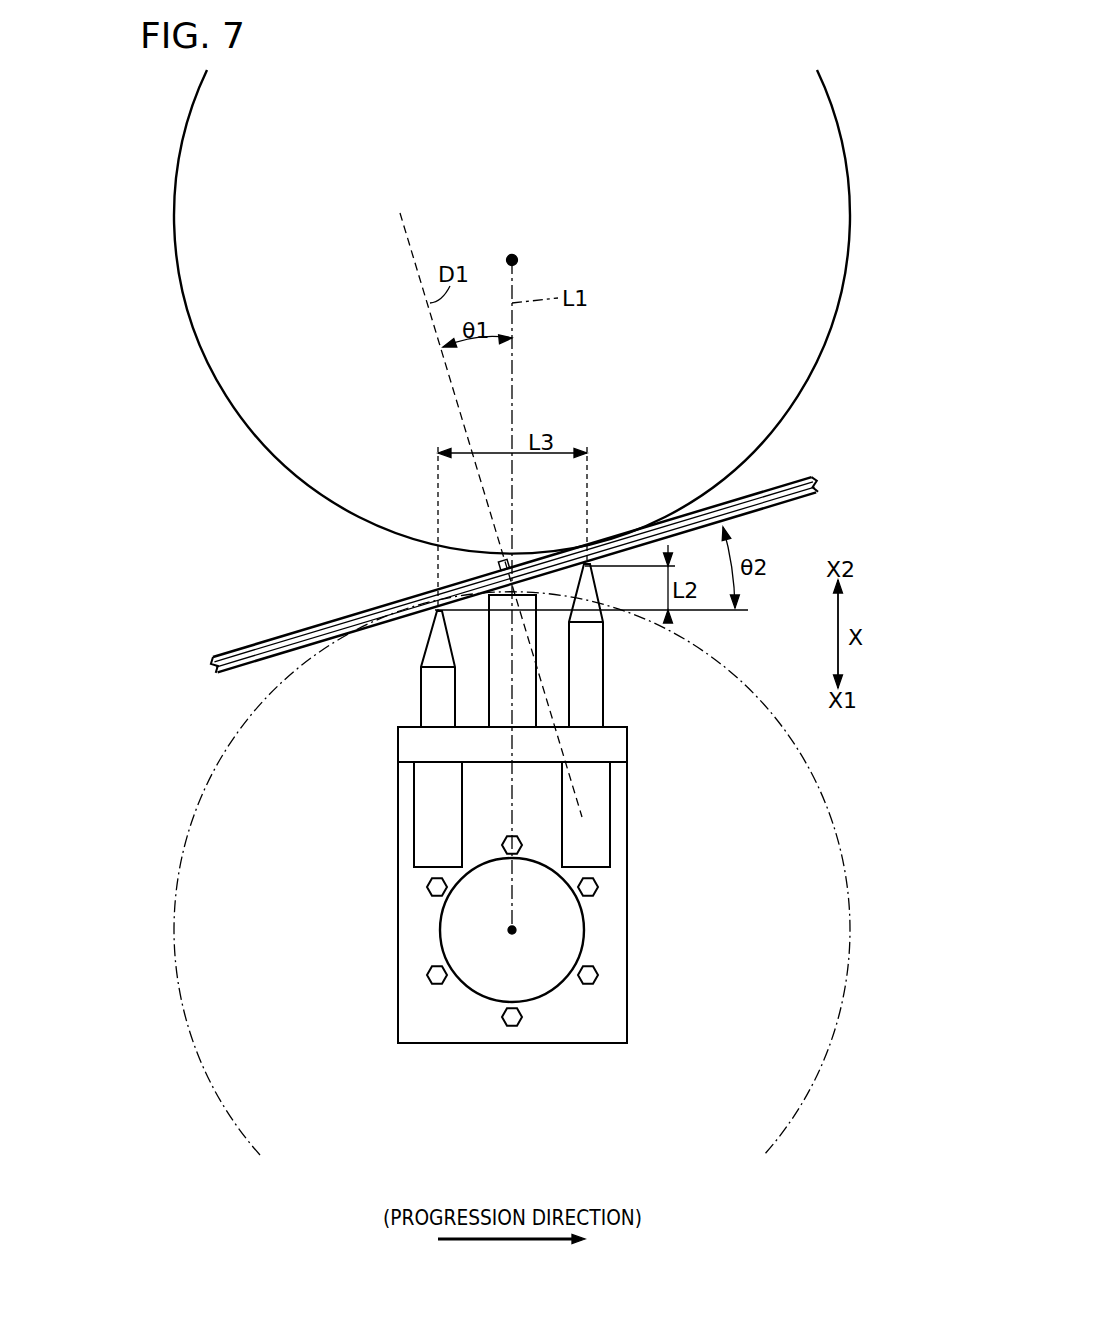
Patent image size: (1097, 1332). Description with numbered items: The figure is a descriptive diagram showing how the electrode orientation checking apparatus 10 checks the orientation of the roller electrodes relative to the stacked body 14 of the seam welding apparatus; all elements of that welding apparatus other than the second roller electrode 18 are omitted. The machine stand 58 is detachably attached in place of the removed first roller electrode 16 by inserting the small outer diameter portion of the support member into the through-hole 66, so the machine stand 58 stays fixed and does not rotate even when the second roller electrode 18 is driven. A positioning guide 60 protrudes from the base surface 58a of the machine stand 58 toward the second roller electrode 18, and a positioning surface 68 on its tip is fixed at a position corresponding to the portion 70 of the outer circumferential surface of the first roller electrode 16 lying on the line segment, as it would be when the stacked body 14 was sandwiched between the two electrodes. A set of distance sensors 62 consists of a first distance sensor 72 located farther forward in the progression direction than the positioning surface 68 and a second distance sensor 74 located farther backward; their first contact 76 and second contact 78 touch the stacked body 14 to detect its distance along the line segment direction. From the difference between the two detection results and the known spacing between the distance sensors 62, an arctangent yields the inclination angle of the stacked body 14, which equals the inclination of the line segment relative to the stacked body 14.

The electrode orientation checking apparatus 10 is at (667, 806).
The stacked body 14 is at (258, 637).
The first roller electrode 16 is at (748, 684).
The second roller electrode 18 is at (790, 407).
The machine stand 58 is at (549, 909).
The base surface 58a is at (511, 737).
The positioning guide 60 is at (592, 615).
The distance sensors 62 is at (500, 597).
The through-hole 66 is at (487, 983).
The positioning surface 68 is at (544, 546).
The portion of the outer circumferential surface 70 is at (522, 593).
The first distance sensor 72 is at (631, 597).
The second distance sensor 74 is at (381, 669).
The first contact 76 is at (595, 687).
The second contact 78 is at (412, 641).